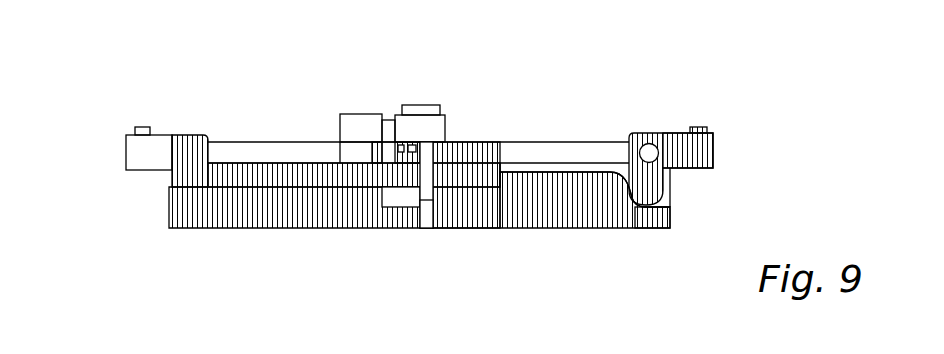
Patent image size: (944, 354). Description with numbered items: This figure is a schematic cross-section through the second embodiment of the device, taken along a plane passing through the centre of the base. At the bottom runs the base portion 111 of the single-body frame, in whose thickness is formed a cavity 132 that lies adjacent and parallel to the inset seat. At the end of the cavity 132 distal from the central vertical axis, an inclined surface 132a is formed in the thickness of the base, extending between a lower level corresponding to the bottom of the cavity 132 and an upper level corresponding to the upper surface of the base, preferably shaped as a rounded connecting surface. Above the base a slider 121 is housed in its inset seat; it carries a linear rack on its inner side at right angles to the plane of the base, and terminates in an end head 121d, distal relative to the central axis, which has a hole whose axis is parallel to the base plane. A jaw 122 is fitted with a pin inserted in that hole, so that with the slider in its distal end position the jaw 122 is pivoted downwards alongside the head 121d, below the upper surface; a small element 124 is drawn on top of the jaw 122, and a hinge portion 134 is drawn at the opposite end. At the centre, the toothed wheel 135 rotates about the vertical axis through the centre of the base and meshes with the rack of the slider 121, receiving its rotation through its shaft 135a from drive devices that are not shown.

The base 111 is at (207, 200).
The slider 121 is at (320, 175).
The end head 121d is at (193, 145).
The jaw 122 is at (146, 162).
The small block 124 is at (141, 131).
The cavity 132 is at (580, 163).
The inclined surface 132a is at (648, 207).
The hinge 134 is at (650, 153).
The toothed wheel 135 is at (452, 150).
The shaft 135a is at (430, 217).